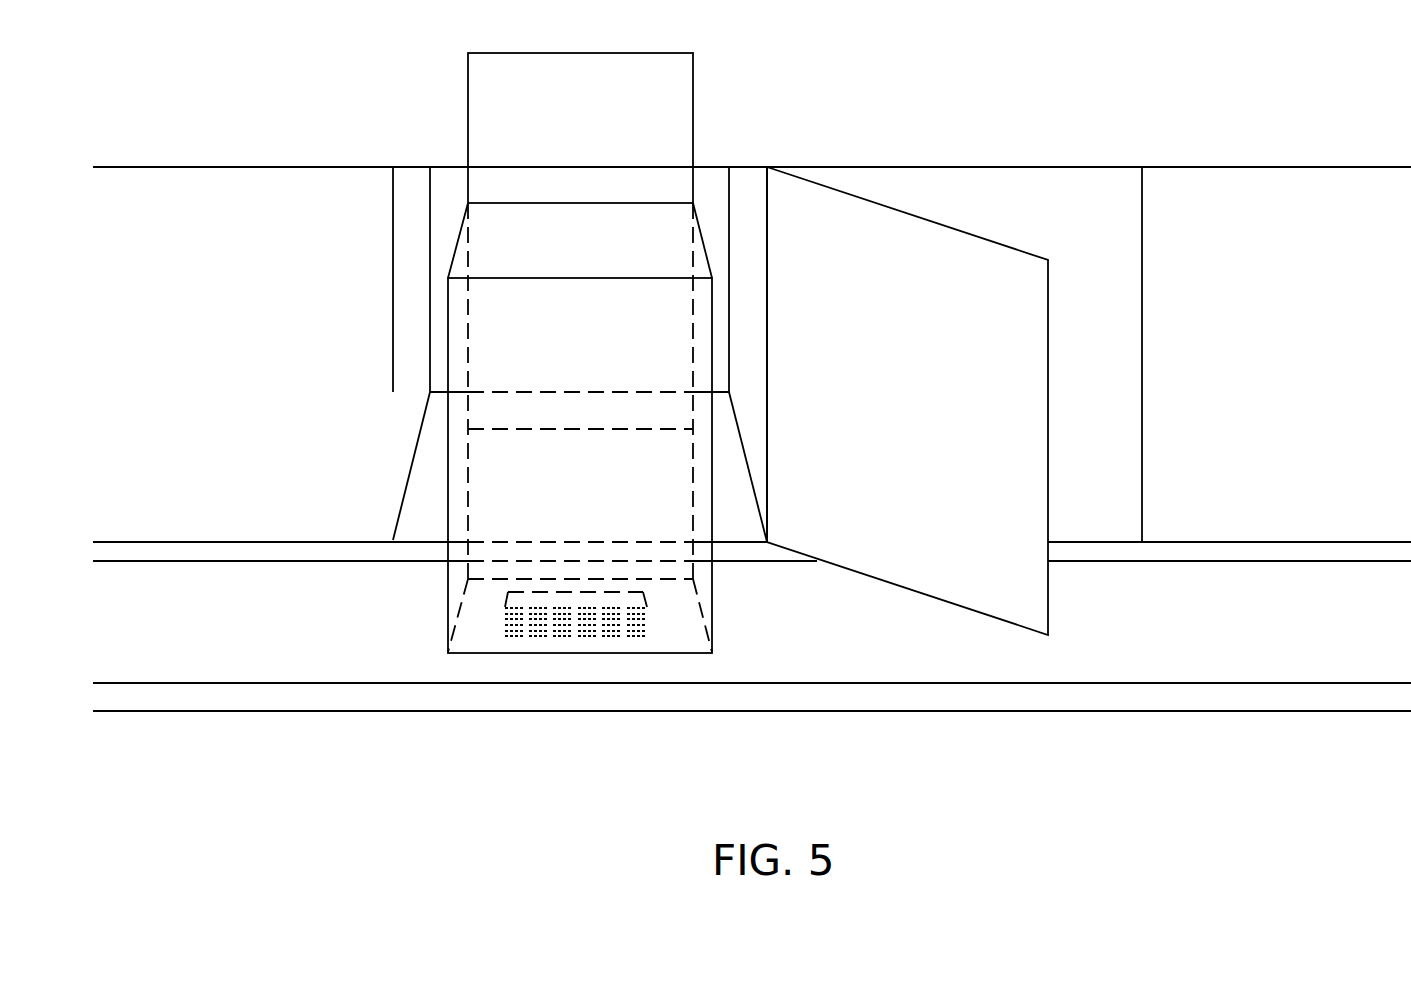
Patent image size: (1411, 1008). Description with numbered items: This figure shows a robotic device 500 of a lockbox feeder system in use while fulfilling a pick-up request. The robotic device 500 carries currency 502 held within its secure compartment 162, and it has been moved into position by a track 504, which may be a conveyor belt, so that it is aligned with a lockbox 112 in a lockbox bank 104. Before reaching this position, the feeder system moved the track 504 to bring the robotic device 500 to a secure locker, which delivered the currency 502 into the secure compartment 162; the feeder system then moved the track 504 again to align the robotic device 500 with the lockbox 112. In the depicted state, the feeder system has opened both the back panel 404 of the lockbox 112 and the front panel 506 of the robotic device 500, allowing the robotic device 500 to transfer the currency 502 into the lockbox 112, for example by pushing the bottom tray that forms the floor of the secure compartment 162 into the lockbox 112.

The lockbox bank 104 is at (213, 92).
The lockbox 112 is at (440, 164).
The front panel 506 is at (693, 128).
The robotic device 500 is at (429, 597).
The secure compartment 162 is at (673, 597).
The currency 502 is at (580, 635).
The back panel 404 is at (935, 597).
The track 504 is at (1357, 657).